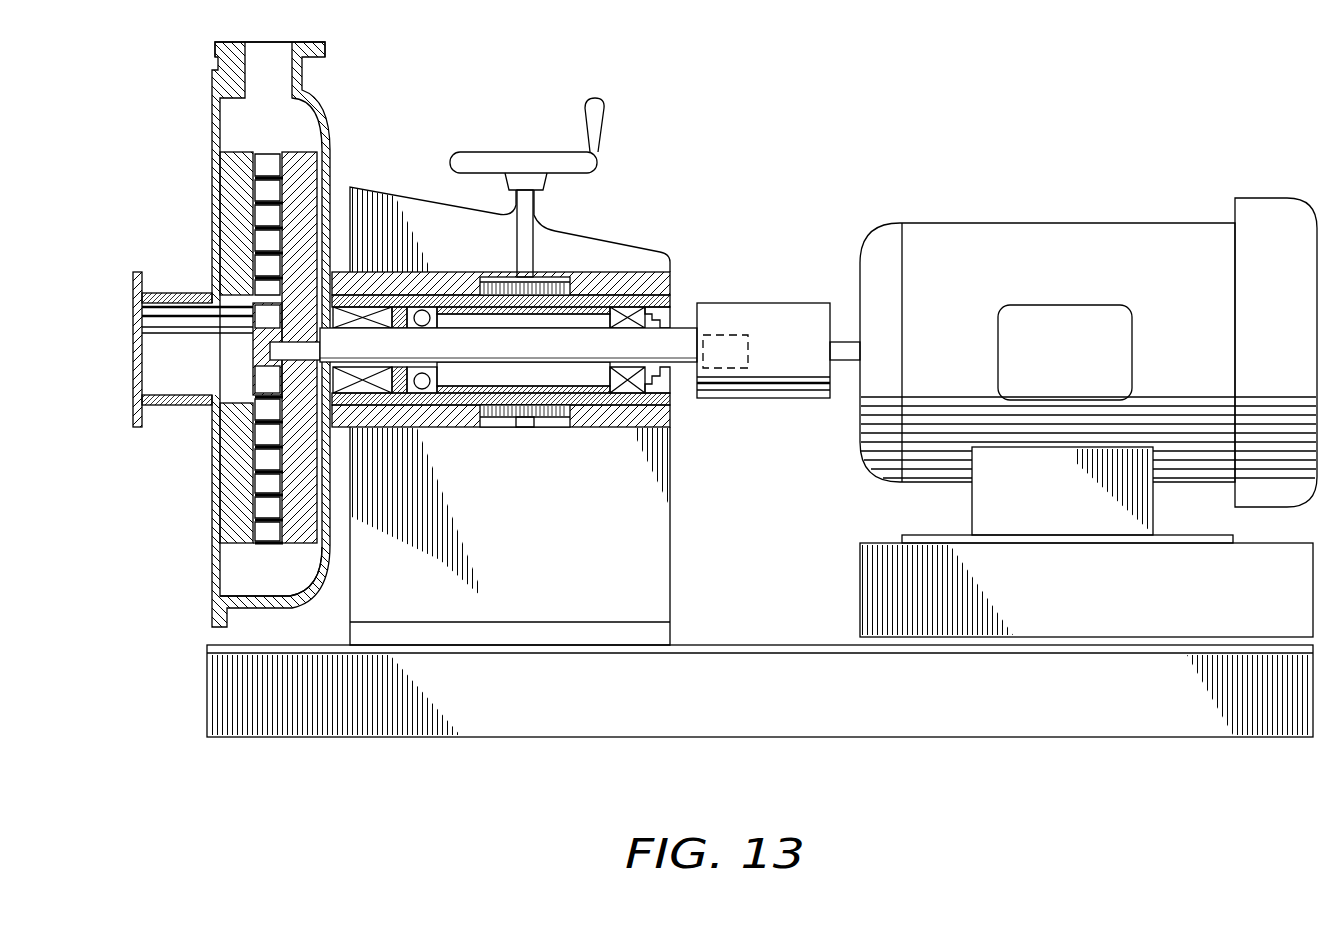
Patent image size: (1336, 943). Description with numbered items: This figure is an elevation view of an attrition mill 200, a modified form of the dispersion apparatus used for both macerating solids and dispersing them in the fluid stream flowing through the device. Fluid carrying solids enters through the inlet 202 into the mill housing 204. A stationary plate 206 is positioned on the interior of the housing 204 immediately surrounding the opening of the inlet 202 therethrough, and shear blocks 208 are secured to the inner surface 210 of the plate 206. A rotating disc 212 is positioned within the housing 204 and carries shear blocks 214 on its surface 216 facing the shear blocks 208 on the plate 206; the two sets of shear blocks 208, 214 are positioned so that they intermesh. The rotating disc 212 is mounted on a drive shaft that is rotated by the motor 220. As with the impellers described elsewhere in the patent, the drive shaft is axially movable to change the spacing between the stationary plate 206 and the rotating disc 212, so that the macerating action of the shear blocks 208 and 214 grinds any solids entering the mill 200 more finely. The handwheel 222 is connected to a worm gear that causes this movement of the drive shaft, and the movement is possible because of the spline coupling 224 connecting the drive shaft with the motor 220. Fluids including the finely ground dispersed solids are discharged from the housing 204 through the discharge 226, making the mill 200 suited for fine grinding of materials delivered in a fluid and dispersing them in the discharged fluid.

The mill 200 is at (318, 112).
The inlet 202 is at (133, 283).
The mill housing 204 is at (212, 118).
The stationary plate 206 is at (238, 172).
The shear blocks 208 is at (265, 190).
The inner surface 210 is at (258, 262).
The rotating disc 212 is at (298, 540).
The shear blocks 214 is at (267, 540).
The surface 216 is at (262, 487).
The motor 220 is at (1070, 223).
The handwheel 222 is at (493, 152).
The spline coupling 224 is at (762, 303).
The discharge 226 is at (215, 48).